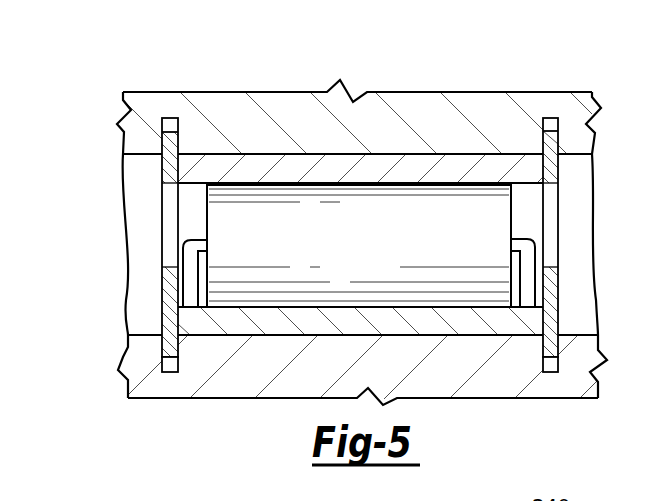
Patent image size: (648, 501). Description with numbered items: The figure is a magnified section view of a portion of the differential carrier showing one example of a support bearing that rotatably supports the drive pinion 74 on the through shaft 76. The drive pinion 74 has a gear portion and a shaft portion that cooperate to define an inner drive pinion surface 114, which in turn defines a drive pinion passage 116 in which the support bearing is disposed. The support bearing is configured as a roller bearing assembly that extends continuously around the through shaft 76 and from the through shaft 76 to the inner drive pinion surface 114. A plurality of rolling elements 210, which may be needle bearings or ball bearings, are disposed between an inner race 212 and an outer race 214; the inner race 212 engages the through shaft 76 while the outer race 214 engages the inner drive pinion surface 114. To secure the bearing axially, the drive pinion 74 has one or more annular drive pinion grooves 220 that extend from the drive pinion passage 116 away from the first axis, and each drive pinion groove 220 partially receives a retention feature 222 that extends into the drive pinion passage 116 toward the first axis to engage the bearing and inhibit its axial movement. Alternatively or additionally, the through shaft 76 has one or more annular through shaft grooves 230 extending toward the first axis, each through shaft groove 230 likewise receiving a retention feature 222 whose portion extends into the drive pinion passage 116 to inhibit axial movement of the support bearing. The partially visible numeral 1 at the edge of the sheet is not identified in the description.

The drive pinion 74 is at (444, 122).
The through shaft 76 is at (322, 377).
The inner drive pinion surface 114 is at (560, 156).
The drive pinion passage 116 is at (137, 262).
The outer race 214 is at (330, 154).
The inner race 212 is at (400, 335).
The rolling elements 210 is at (370, 254).
The drive pinion groove 220 is at (171, 118).
The retention feature 222 is at (162, 162).
The through shaft groove 230 is at (172, 372).
The partial numeral 1 is at (644, 254).